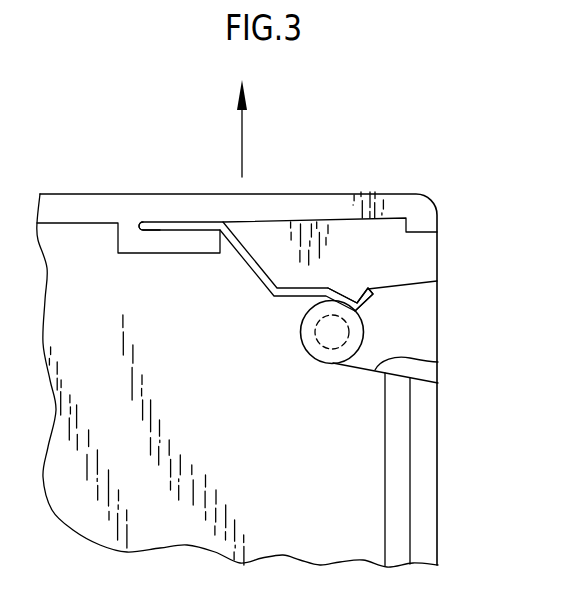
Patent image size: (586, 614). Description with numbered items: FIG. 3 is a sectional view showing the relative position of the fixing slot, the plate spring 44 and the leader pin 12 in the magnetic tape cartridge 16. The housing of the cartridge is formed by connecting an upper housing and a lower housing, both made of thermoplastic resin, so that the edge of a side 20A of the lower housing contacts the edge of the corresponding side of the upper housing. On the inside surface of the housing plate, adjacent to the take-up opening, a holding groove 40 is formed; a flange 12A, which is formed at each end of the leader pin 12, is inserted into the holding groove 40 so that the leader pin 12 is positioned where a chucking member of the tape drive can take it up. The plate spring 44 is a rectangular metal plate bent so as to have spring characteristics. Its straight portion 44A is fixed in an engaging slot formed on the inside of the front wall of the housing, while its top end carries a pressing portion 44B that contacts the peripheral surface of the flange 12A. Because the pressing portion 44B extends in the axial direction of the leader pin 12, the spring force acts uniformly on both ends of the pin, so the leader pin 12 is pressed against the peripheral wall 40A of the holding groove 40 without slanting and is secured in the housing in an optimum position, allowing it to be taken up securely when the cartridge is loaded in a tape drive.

The leader pin 12 is at (320, 369).
The flange 12A is at (365, 325).
The magnetic tape cartridge 16 is at (448, 178).
The side 20A is at (283, 191).
The holding groove 40 is at (173, 222).
The peripheral wall 40A is at (438, 362).
The plate spring 44 is at (258, 280).
The straight portion 44A is at (188, 231).
The pressing portion 44B is at (355, 297).